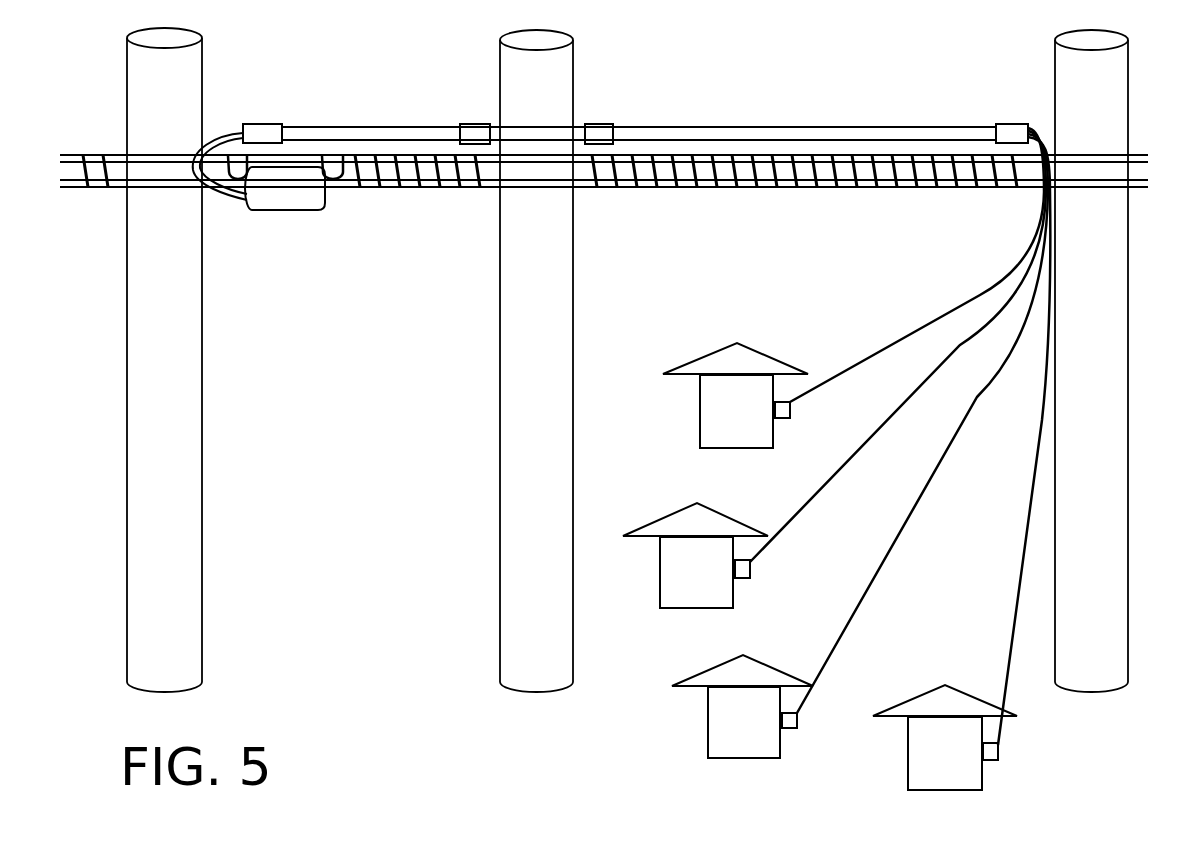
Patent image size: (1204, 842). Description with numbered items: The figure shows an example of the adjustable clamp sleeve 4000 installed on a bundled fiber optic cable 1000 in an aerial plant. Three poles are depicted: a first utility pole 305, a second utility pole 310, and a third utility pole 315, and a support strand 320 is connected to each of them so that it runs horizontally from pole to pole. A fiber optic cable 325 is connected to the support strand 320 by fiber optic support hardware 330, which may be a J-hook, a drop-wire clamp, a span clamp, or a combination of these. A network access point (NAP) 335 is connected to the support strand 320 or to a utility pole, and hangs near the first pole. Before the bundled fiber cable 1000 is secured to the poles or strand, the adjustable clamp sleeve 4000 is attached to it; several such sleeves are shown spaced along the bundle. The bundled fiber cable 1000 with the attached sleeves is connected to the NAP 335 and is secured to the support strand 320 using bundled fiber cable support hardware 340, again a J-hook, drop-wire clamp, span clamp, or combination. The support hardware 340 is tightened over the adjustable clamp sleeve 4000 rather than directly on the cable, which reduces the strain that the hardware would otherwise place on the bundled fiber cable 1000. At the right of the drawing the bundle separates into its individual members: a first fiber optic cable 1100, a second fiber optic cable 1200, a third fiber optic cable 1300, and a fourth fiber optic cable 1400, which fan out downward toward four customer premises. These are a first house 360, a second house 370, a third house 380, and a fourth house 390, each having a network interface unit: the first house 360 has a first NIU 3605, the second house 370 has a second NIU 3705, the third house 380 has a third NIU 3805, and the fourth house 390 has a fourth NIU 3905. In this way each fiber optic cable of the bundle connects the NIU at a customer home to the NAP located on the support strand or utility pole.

The first utility pole 305 is at (203, 458).
The second utility pole 310 is at (574, 463).
The third utility pole 315 is at (1130, 461).
The support strand 320 is at (117, 153).
The fiber optic cable 325 is at (118, 188).
The fiber optic support hardware 330 is at (72, 170).
The network access point 335 is at (284, 211).
The bundled fiber cable support hardware 340 is at (258, 163).
The first house 360 is at (735, 395).
The second house 370 is at (695, 555).
The third house 380 is at (742, 706).
The fourth house 390 is at (945, 737).
The first NIU 3605 is at (783, 419).
The second NIU 3705 is at (742, 579).
The third NIU 3805 is at (788, 729).
The fourth NIU 3905 is at (992, 761).
The bundled fiber cable 1000 is at (808, 128).
The first fiber optic cable 1100 is at (890, 342).
The second fiber optic cable 1200 is at (877, 432).
The third fiber optic cable 1300 is at (897, 547).
The fourth fiber optic cable 1400 is at (1020, 607).
The adjustable clamp sleeve 4000 is at (1018, 123).